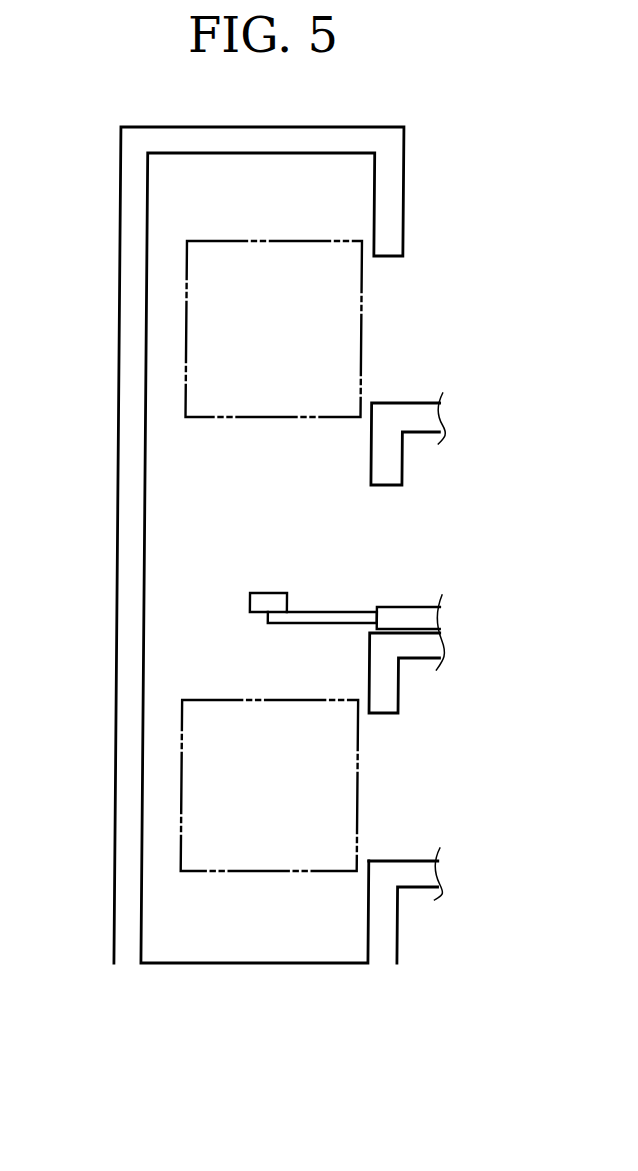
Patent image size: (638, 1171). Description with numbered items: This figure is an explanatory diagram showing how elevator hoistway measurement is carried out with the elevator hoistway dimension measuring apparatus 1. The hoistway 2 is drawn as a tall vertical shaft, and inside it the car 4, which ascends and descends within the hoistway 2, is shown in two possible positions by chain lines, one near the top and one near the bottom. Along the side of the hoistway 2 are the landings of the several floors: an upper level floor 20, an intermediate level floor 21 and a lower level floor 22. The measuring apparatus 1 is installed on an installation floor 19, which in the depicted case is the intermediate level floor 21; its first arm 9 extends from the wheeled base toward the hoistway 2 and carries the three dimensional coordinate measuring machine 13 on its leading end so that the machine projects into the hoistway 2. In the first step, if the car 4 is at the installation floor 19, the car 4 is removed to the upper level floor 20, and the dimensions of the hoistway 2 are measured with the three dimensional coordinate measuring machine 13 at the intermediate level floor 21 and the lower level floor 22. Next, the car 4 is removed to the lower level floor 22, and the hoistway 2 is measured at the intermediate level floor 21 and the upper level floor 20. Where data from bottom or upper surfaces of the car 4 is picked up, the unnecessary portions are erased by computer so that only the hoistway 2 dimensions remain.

The elevator hoistway dimension measuring apparatus 1 is at (414, 578).
The hoistway 2 is at (229, 490).
The car 4 is at (216, 362).
The first arm 9 is at (290, 628).
The three dimensional coordinate measuring machine 13 is at (272, 593).
The installation floor 19 is at (423, 628).
The upper level floor 20 is at (415, 403).
The intermediate level floor 21 is at (402, 632).
The lower level floor 22 is at (417, 860).